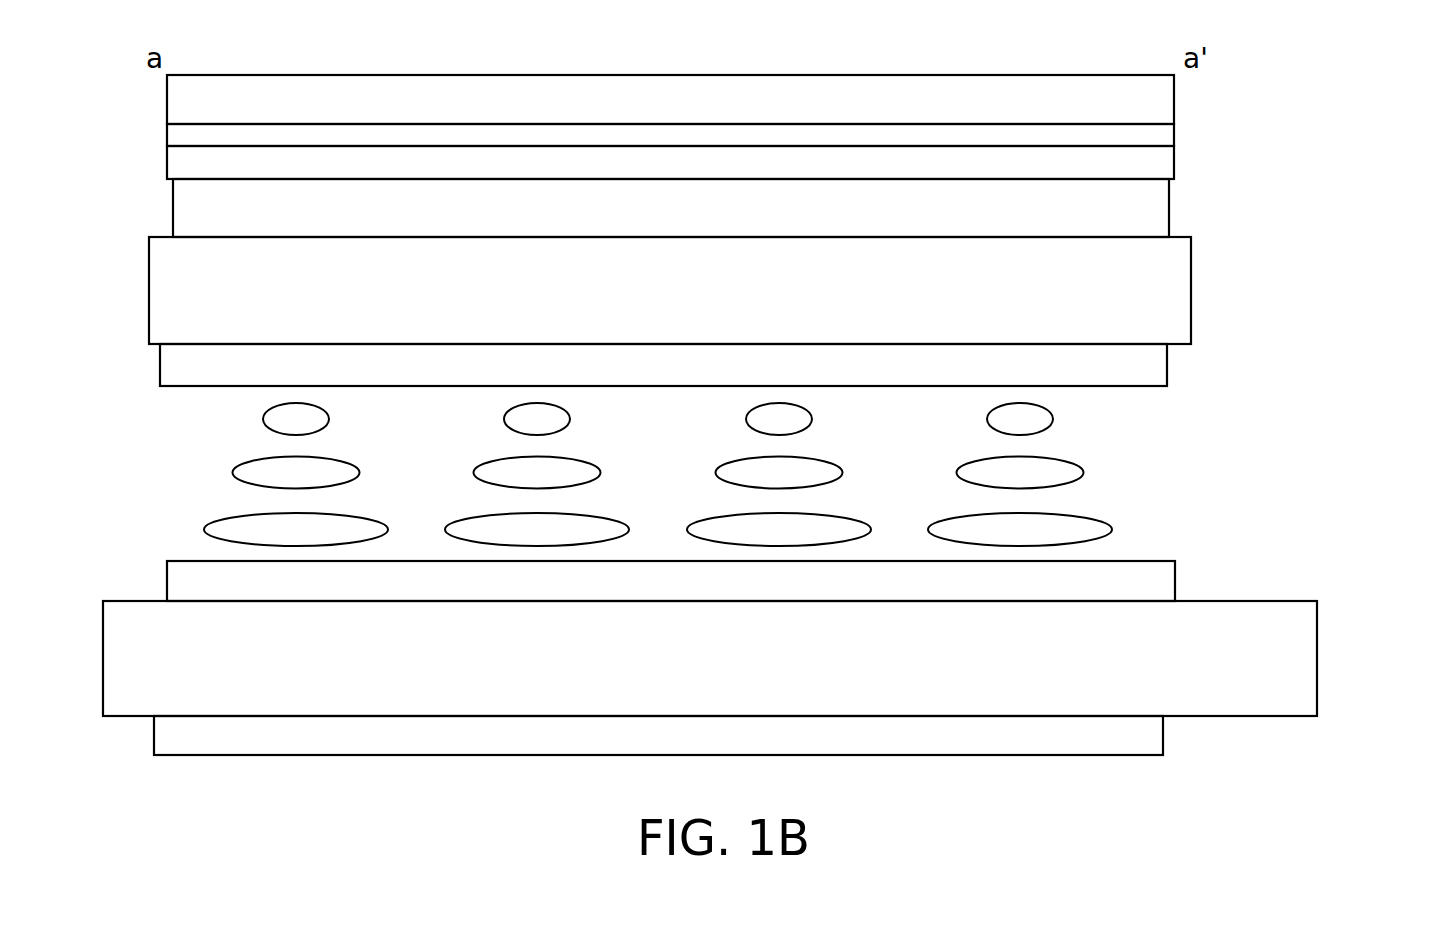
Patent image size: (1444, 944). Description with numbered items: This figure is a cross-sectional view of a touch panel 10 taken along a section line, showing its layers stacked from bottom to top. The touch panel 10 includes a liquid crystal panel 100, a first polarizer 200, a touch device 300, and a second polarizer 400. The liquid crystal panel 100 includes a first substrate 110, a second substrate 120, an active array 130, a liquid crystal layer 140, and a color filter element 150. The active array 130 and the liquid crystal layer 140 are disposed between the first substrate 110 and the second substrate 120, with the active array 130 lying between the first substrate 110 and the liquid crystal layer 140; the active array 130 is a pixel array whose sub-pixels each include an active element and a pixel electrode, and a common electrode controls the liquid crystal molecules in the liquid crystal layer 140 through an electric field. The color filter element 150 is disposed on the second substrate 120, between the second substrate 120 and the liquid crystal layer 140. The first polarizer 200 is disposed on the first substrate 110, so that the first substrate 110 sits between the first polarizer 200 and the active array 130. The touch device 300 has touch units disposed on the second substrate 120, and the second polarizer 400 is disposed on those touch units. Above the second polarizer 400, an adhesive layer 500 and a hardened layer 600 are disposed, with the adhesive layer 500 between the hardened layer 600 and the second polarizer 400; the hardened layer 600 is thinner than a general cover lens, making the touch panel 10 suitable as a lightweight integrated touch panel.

The touch panel 10 is at (1416, 778).
The liquid crystal panel 100 is at (769, 476).
The first substrate 110 is at (740, 658).
The second substrate 120 is at (1183, 287).
The active array 130 is at (1168, 582).
The liquid crystal layer 140 is at (1172, 391).
The color filter element 150 is at (1163, 367).
The first polarizer 200 is at (1155, 738).
The touch device 300 is at (1160, 212).
The second polarizer 400 is at (1168, 167).
The adhesive layer 500 is at (1168, 137).
The hardened layer 600 is at (1168, 98).